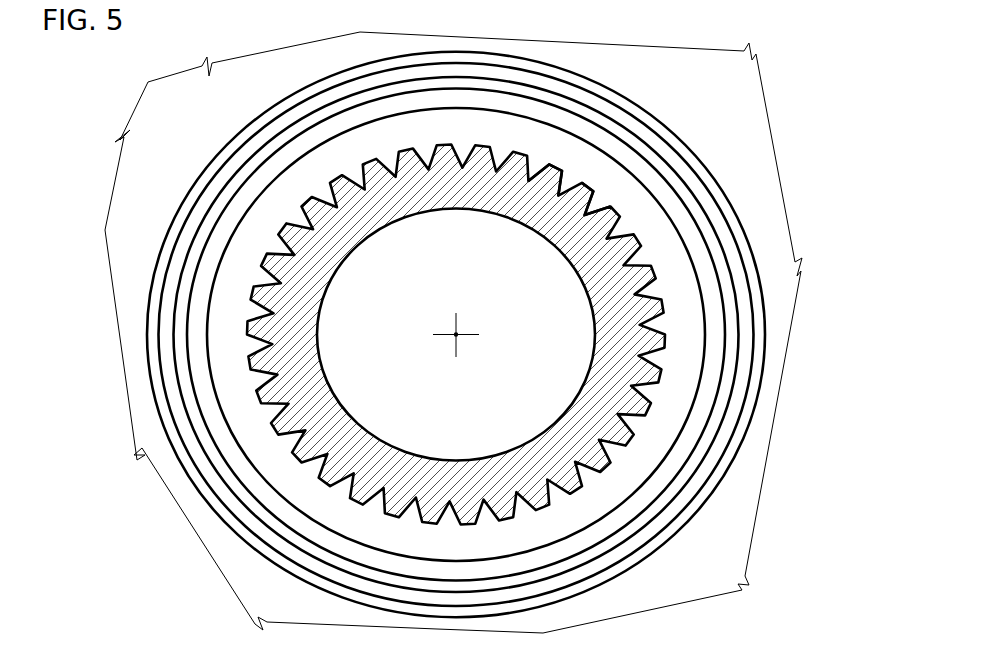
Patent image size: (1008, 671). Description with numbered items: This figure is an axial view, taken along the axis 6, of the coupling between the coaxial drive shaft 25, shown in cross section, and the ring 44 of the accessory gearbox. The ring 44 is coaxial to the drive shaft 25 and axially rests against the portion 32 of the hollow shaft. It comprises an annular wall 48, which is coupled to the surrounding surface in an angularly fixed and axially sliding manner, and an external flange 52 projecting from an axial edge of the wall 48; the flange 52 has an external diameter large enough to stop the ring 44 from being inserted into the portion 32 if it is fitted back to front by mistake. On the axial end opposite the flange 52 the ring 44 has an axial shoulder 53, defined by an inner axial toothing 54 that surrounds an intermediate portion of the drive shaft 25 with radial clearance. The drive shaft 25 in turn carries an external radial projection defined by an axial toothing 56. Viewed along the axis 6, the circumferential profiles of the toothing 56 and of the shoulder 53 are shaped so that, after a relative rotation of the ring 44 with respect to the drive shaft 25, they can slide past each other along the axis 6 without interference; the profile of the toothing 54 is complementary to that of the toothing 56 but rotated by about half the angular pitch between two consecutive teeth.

The axis 6 is at (456, 358).
The coaxial drive shaft 25 is at (552, 252).
The portion 32 is at (716, 398).
The ring 44 is at (736, 332).
The annular wall 48 is at (686, 420).
The external flange 52 is at (730, 283).
The axial shoulder 53 is at (557, 163).
The inner axial toothing 54 is at (602, 199).
The axial toothing 56 is at (505, 143).